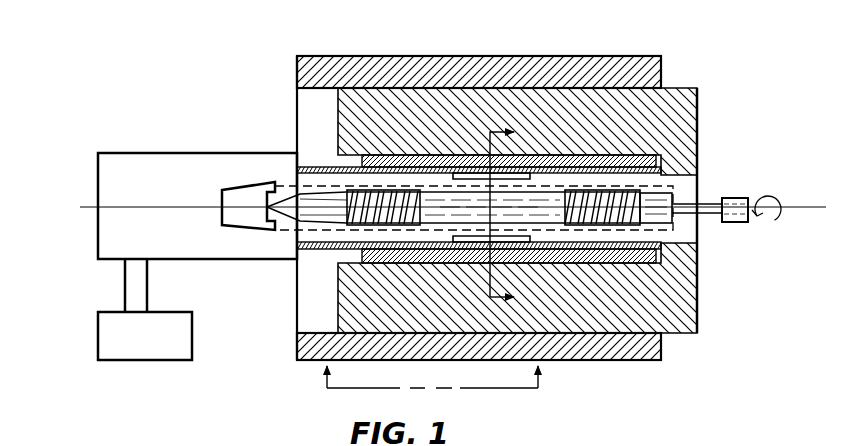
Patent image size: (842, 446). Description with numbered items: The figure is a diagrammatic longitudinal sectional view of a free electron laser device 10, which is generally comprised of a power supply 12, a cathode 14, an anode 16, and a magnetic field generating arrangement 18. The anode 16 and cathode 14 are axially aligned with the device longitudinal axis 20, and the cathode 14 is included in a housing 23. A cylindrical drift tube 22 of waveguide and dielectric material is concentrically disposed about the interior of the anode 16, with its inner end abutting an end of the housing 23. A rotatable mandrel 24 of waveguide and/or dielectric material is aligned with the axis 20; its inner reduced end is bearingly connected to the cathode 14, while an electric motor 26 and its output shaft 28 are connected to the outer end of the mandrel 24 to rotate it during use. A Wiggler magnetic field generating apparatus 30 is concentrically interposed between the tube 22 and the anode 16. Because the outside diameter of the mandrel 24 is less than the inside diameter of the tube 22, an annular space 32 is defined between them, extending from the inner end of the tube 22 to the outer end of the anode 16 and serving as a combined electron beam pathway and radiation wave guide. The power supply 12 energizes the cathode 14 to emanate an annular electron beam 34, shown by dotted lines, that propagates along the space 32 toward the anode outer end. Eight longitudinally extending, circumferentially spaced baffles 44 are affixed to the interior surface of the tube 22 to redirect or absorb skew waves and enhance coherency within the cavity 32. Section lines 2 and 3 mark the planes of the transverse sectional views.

The free electron laser device 10 is at (709, 42).
The power supply 12 is at (150, 345).
The cathode 14 is at (222, 194).
The anode 16 is at (697, 121).
The magnetic field generating arrangement 18 is at (297, 343).
The device longitudinal axis 20 is at (806, 211).
The cylindrical drift tube 22 is at (322, 167).
The housing 23 is at (247, 260).
The rotatable mandrel 24 is at (684, 175).
The electric motor 26 is at (740, 223).
The output shaft 28 is at (708, 200).
The Wiggler magnetic field generating apparatus 30 is at (642, 264).
The annular space 32 is at (686, 221).
The electron beam 34 is at (596, 170).
The baffles 44 is at (461, 151).
The section line 2- 2 is at (429, 378).
The section line 3- 3 is at (511, 215).